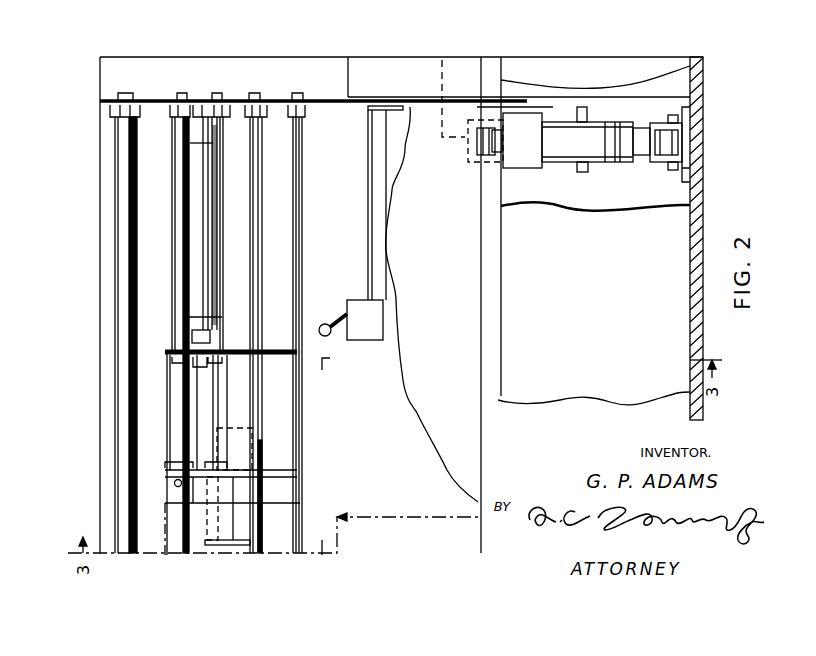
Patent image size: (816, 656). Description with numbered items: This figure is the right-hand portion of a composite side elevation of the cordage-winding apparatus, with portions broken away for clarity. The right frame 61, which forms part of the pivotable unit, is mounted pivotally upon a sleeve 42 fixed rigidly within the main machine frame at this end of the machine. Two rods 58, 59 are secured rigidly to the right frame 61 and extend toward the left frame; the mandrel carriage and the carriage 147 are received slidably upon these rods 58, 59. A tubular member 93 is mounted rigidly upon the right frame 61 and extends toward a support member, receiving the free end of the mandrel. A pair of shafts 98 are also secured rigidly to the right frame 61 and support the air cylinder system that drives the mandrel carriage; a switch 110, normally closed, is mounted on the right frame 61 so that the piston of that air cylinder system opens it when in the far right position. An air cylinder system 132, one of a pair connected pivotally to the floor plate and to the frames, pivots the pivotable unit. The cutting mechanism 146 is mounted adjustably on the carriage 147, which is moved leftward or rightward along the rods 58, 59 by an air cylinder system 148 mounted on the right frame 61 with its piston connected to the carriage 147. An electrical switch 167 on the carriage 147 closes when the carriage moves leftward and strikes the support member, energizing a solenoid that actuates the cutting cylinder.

The sleeve 42 is at (462, 70).
The rod 58 is at (178, 250).
The rod 59 is at (222, 252).
The right frame 61 is at (100, 101).
The tubular member 93 is at (117, 322).
The shafts 98 is at (257, 263).
The switch 110 is at (360, 340).
The air cylinder system 132 is at (600, 113).
The cutting mechanism 146 is at (232, 428).
The carriage 147 is at (243, 350).
The air cylinder system 148 is at (197, 193).
The electrical switch 167 is at (167, 462).